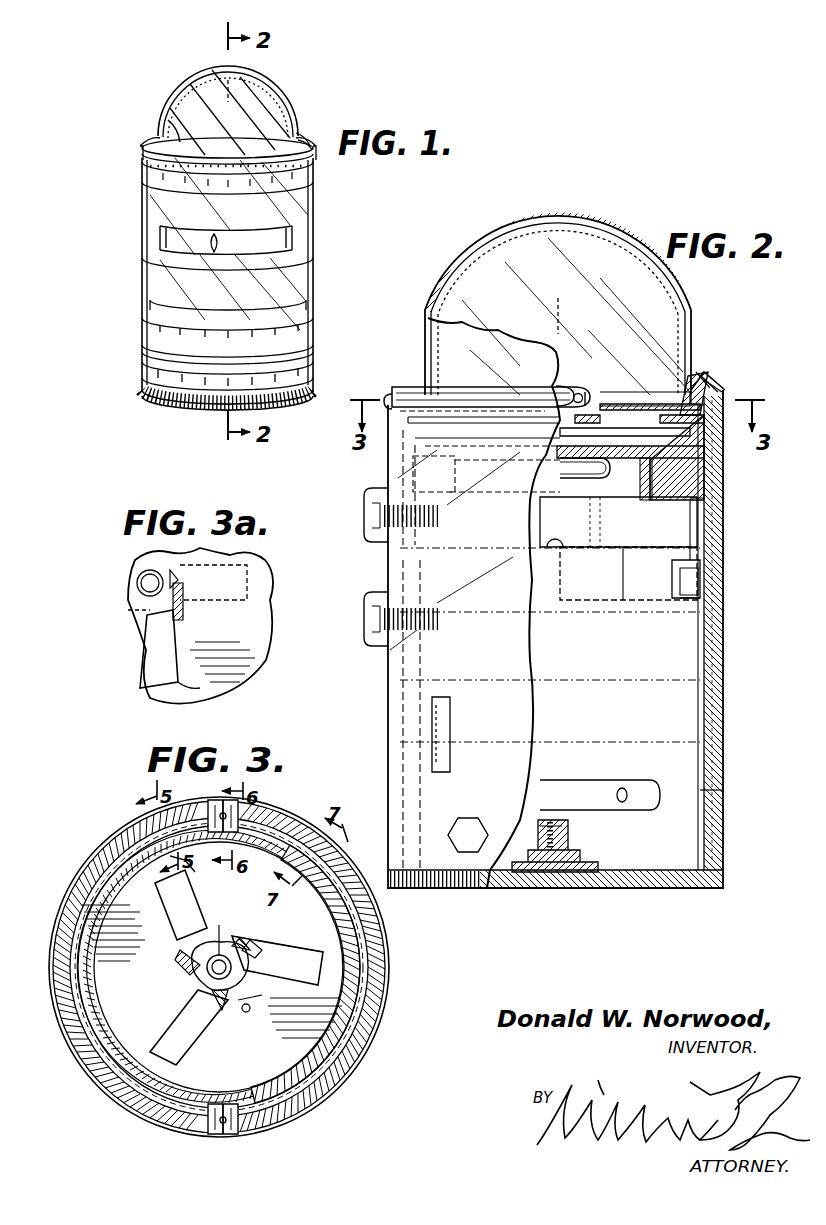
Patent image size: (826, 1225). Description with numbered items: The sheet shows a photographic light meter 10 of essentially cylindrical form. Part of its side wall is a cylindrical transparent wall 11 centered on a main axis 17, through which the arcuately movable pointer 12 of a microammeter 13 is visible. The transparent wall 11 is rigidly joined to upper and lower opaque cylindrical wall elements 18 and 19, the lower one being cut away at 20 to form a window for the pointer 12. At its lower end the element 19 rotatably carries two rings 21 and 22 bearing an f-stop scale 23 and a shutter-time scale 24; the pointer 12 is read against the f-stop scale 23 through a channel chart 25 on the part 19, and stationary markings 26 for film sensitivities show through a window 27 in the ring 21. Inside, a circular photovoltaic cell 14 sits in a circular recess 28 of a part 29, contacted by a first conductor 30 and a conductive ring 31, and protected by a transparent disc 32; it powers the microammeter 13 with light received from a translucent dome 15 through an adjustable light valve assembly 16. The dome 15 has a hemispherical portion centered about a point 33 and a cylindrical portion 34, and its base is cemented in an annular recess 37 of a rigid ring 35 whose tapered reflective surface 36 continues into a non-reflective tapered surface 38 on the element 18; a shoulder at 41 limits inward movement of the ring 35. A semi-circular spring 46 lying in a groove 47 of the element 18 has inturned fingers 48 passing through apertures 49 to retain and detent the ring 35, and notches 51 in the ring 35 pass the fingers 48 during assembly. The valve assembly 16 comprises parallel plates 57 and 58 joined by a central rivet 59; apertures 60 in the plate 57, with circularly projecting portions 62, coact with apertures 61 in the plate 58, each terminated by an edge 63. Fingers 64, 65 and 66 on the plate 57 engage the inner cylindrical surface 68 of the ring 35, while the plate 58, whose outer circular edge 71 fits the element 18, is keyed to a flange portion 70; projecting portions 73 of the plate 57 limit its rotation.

In FIG. 1, the light meter 10 is at (340, 228).
In FIG. 1, the cylindrical transparent wall 11 is at (297, 247).
In FIG. 2, the cylindrical transparent wall 11 is at (705, 566).
In FIG. 1, the pointer 12 is at (214, 234).
In FIG. 2, the pointer 12 is at (700, 582).
In FIG. 1, the microammeter 13 is at (143, 281).
In FIG. 2, the microammeter 13 is at (604, 580).
In FIG. 2, the photovoltaic cell 14 is at (634, 470).
In FIG. 1, the light collecting dome 15 is at (262, 110).
In FIG. 2, the light collecting dome 15 is at (600, 245).
In FIG. 2, the light valve assembly 16 is at (630, 412).
In FIG. 3A, the light valve assembly 16 is at (272, 648).
In FIG. 3, the light valve assembly 16 is at (334, 974).
In FIG. 1, the main axis 17 is at (240, 88).
In FIG. 2, the main axis 17 is at (562, 312).
In FIG. 3, the main axis 17 is at (218, 952).
In FIG. 2, the upper opaque cylindrical wall element 18 is at (705, 532).
In FIG. 2, the lower opaque cylindrical wall element 19 is at (702, 658).
In FIG. 1, the cutaway window 20 is at (300, 258).
In FIG. 2, the cutaway window 20 is at (702, 600).
In FIG. 1, the ring 21 is at (143, 342).
In FIG. 2, the ring 21 is at (723, 748).
In FIG. 1, the ring 22 is at (142, 370).
In FIG. 2, the ring 22 is at (723, 836).
In FIG. 1, the f-stop scale 23 is at (302, 328).
In FIG. 1, the shutter-time scale 24 is at (304, 356).
In FIG. 1, the channel chart 25 is at (302, 290).
In FIG. 2, the stationary markings 26 is at (450, 722).
In FIG. 2, the window 27 is at (450, 750).
In FIG. 2, the circular recess 28 is at (692, 470).
In FIG. 2, the part 29 is at (690, 488).
In FIG. 2, the first conductor 30 is at (612, 480).
In FIG. 2, the conductive ring 31 is at (726, 398).
In FIG. 2, the transparent disc 32 is at (644, 396).
In FIG. 2, the center point 33 is at (560, 368).
In FIG. 1, the cylindrical portion 34 is at (175, 130).
In FIG. 2, the cylindrical portion 34 is at (694, 380).
In FIG. 1, the rigid ring 35 is at (300, 135).
In FIG. 2, the rigid ring 35 is at (702, 378).
In FIG. 1, the reflective surface 36 is at (304, 142).
In FIG. 2, the reflective surface 36 is at (712, 382).
In FIG. 2, the annular recess 37 is at (688, 396).
In FIG. 1, the frusto-conically tapered surface 38 is at (308, 150).
In FIG. 2, the frusto-conically tapered surface 38 is at (728, 392).
In FIG. 2, the shoulder 41 is at (730, 386).
In FIG. 2, the spring 46 is at (390, 400).
In FIG. 3, the spring 46 is at (88, 866).
In FIG. 2, the semi-circular groove 47 is at (402, 387).
In FIG. 3, the semi-circular groove 47 is at (78, 920).
In FIG. 2, the spring fingers 48 is at (579, 393).
In FIG. 3, the spring fingers 48 is at (256, 818).
In FIG. 2, the apertures 49 is at (587, 396).
In FIG. 3, the apertures 49 is at (224, 814).
In FIG. 3A, the notches 51 is at (260, 582).
In FIG. 3, the notches 51 is at (320, 880).
In FIG. 2, the valve plate 57 is at (682, 420).
In FIG. 3, the valve plate 57 is at (152, 1030).
In FIG. 2, the valve plate 58 is at (682, 432).
In FIG. 3A, the valve plate 58 is at (172, 638).
In FIG. 3, the valve plate 58 is at (180, 960).
In FIG. 3A, the central rivet 59 is at (148, 574).
In FIG. 3, the central rivet 59 is at (246, 1010).
In FIG. 3A, the apertures 60 is at (200, 690).
In FIG. 3, the apertures 60 is at (292, 946).
In FIG. 3A, the apertures 61 is at (182, 590).
In FIG. 3, the apertures 61 is at (262, 946).
In FIG. 3A, the circularly projecting portions 62 is at (183, 612).
In FIG. 3, the circularly projecting portions 62 is at (240, 940).
In FIG. 3A, the edge 63 is at (140, 612).
In FIG. 3, the finger 64 is at (310, 1066).
In FIG. 3, the finger 65 is at (178, 858).
In FIG. 3, the finger 66 is at (74, 958).
In FIG. 2, the inner cylindrical surface 68 is at (614, 395).
In FIG. 3, the inner cylindrical surface 68 is at (338, 940).
In FIG. 2, the flange portion 70 is at (656, 472).
In FIG. 2, the outer circular edge 71 is at (402, 456).
In FIG. 3, the radially outwardly projecting portions 73 is at (348, 894).